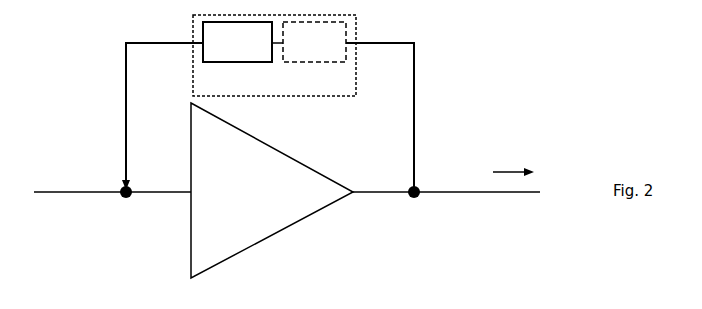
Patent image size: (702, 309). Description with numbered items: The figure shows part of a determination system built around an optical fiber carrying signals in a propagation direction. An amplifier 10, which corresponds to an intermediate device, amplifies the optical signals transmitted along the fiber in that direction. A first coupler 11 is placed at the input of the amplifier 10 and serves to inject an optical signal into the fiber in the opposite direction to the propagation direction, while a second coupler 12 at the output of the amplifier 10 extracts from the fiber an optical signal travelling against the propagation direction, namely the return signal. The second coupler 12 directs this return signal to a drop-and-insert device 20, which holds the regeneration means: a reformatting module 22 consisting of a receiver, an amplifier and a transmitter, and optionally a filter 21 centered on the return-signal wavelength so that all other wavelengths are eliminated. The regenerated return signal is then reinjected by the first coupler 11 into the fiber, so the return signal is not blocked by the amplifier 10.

The amplifier 10 is at (273, 237).
The first coupler 11 is at (128, 198).
The second coupler 12 is at (416, 198).
The drop-and-insert device 20 is at (300, 96).
The filter 21 is at (296, 62).
The reformatting module 22 is at (222, 62).